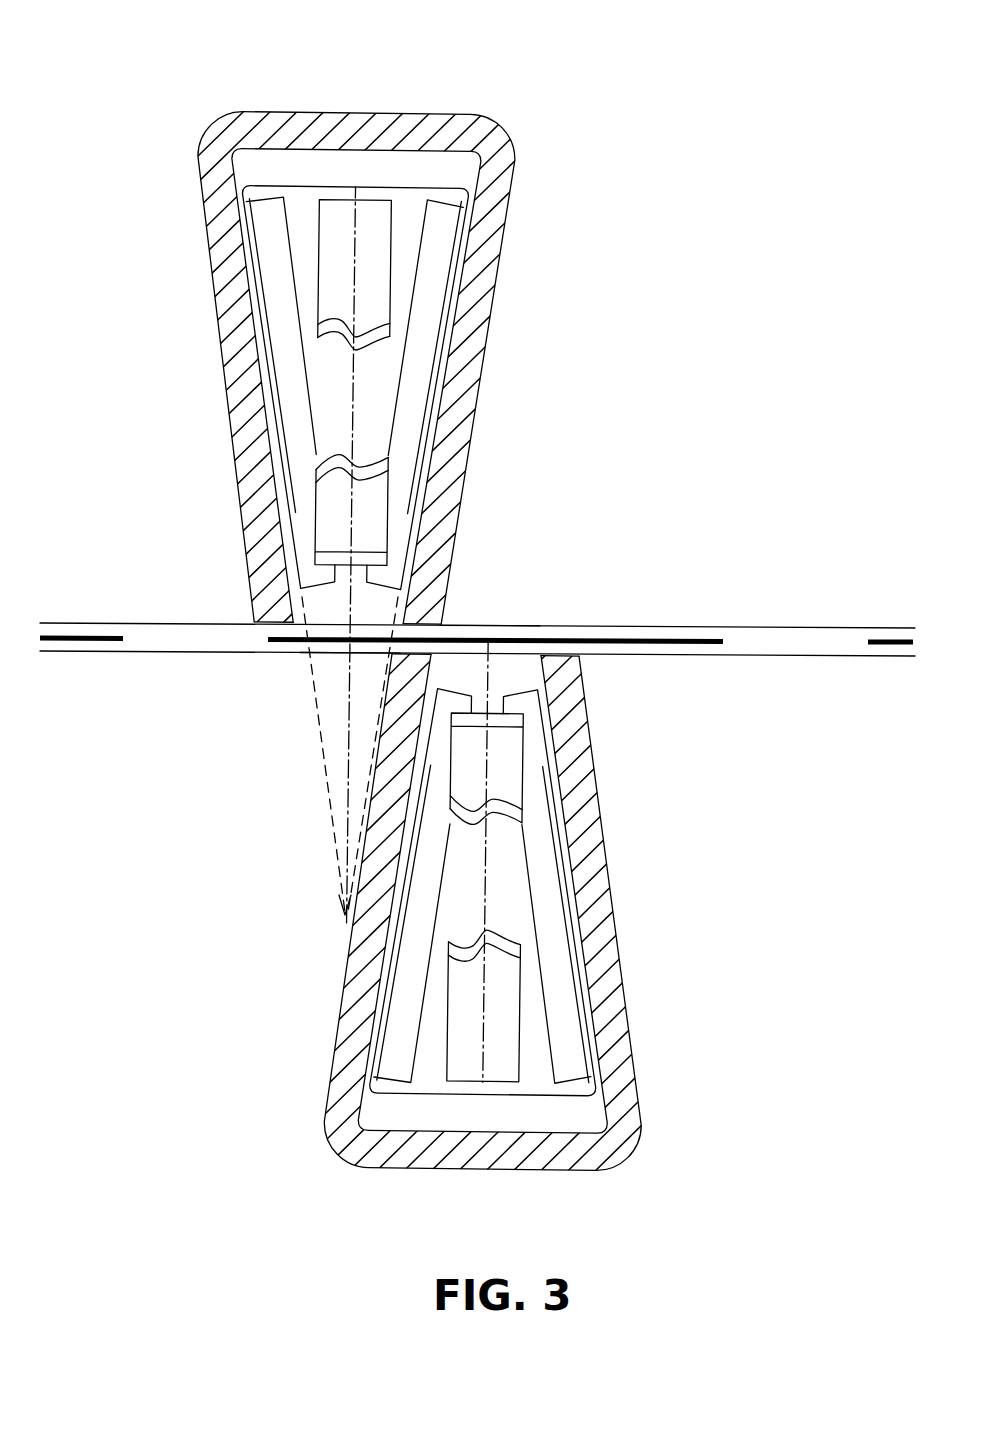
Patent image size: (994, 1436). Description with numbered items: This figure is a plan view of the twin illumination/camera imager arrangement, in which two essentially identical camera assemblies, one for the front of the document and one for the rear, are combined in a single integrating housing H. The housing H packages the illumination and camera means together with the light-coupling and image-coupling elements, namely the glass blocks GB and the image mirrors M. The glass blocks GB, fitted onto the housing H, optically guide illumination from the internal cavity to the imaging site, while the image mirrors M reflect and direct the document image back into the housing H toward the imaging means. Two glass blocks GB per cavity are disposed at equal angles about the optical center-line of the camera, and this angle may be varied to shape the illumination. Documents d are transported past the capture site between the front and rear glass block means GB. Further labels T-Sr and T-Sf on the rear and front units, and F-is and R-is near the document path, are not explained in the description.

The image mirror M is at (362, 207).
The rear transducer shell T-Sr is at (413, 196).
The front transducer shell T-Sf is at (527, 1097).
The integrating housing H is at (500, 288).
The glass block GB is at (283, 357).
The document d is at (80, 637).
The front image surface F-is is at (490, 632).
The rear image surface R-is is at (350, 653).